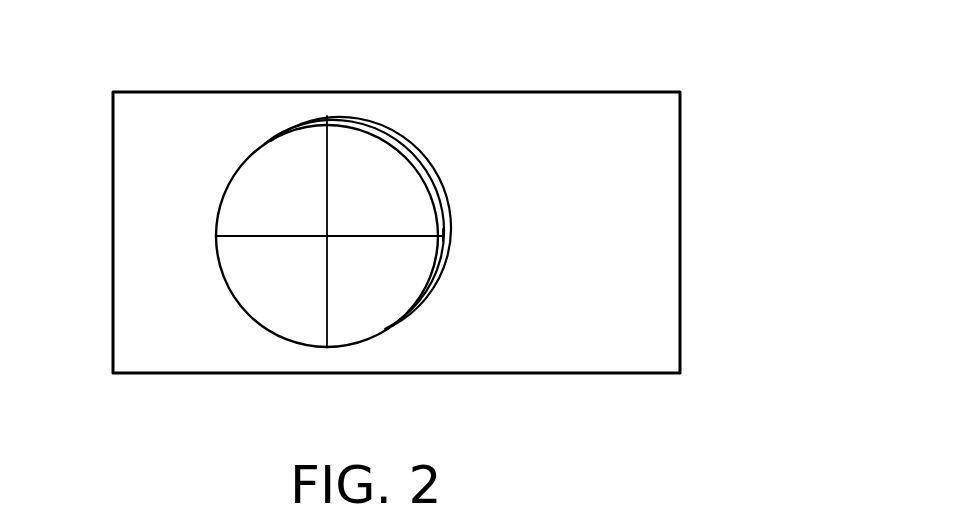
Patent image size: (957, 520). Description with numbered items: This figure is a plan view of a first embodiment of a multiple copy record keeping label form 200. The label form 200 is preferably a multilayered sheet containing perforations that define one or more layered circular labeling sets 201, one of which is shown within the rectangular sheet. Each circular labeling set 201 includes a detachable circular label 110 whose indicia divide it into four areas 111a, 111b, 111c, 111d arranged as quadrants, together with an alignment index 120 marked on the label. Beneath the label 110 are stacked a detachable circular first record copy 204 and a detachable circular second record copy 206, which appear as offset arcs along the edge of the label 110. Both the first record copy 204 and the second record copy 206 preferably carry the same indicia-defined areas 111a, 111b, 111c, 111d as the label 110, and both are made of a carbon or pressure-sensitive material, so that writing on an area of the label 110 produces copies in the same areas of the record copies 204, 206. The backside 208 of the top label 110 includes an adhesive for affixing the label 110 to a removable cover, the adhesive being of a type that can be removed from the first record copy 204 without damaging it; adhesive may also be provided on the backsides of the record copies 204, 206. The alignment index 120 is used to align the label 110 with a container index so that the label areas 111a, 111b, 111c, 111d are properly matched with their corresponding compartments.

The multiple copy record keeping label form 200 is at (712, 239).
The layered circular labeling set 201 is at (466, 270).
The detachable circular label 110 is at (340, 158).
The label area 111a is at (268, 210).
The label area 111b is at (423, 212).
The label area 111c is at (373, 293).
The label area 111d is at (285, 263).
The alignment index 120 is at (288, 184).
The detachable circular first record copy 204 is at (428, 162).
The detachable circular second record copy 206 is at (445, 183).
The backside of the top label 208 is at (372, 123).